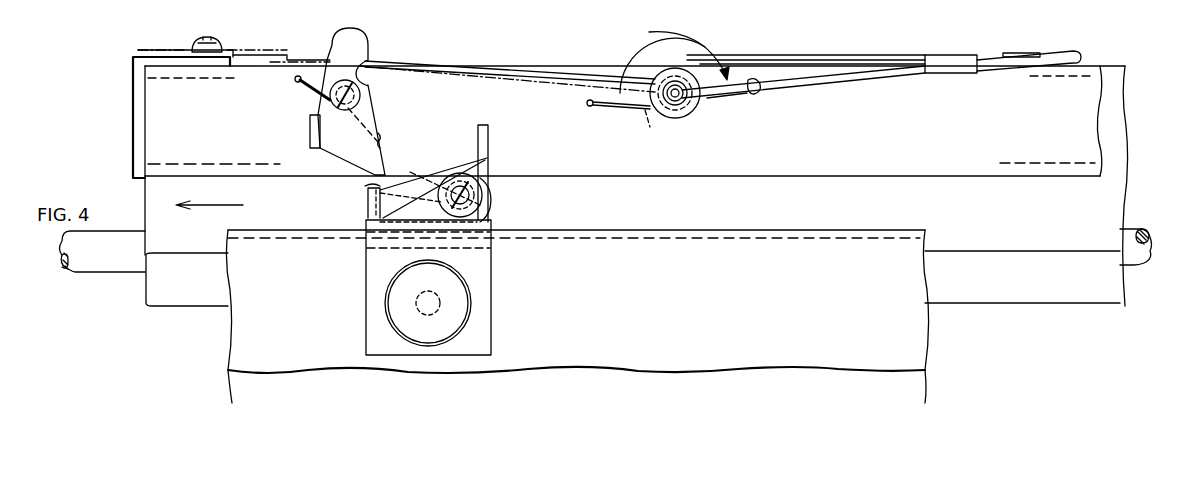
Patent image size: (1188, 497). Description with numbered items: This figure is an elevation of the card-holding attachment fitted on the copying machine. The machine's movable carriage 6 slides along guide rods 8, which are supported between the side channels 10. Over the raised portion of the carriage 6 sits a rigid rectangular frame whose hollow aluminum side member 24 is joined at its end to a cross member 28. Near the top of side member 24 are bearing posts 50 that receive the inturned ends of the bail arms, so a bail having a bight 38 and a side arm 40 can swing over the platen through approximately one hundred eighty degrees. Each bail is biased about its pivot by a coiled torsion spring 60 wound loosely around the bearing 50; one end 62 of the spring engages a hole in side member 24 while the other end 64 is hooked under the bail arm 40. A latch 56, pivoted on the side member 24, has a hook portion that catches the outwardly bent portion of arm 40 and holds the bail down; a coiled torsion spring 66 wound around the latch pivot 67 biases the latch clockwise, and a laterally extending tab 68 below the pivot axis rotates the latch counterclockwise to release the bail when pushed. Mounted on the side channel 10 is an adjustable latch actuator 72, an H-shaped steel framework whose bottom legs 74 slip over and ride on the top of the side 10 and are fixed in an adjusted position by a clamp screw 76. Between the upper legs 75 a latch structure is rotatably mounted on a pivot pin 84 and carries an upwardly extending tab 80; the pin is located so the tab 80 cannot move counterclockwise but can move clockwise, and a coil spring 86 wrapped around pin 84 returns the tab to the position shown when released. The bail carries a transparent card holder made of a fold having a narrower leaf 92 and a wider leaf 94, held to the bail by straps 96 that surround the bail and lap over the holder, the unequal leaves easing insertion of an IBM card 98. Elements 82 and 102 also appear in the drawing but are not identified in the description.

The movable carriage 6 is at (1025, 215).
The guide rods 8 is at (112, 256).
The side channels 10 is at (707, 308).
The side member 24 is at (1035, 140).
The cross member 28 is at (133, 110).
The bight 38 is at (1080, 57).
The side arm 40 is at (805, 80).
The bearing posts 50 is at (688, 105).
The latch 56 is at (364, 45).
The coiled torsion spring 60 is at (652, 122).
The torsion spring end 62 is at (622, 108).
The spring end 64 is at (748, 95).
The coiled torsion spring 66 is at (362, 91).
The pivot 67 is at (365, 102).
The laterally extending tab 68 is at (310, 134).
The adjustable latch actuator 72 is at (509, 268).
The bottom legs 74 is at (486, 288).
The upper legs 75 is at (473, 170).
The clamp screw 76 is at (472, 314).
The tab 80 is at (490, 138).
The pin 82 is at (368, 205).
The pivot pin 84 is at (470, 162).
The coil spring 86 is at (445, 167).
The leaf 92 is at (870, 63).
The leaf 94 is at (757, 35).
The straps 96 is at (1043, 35).
The IBM card 98 is at (673, 57).
The cam 102 is at (188, 50).